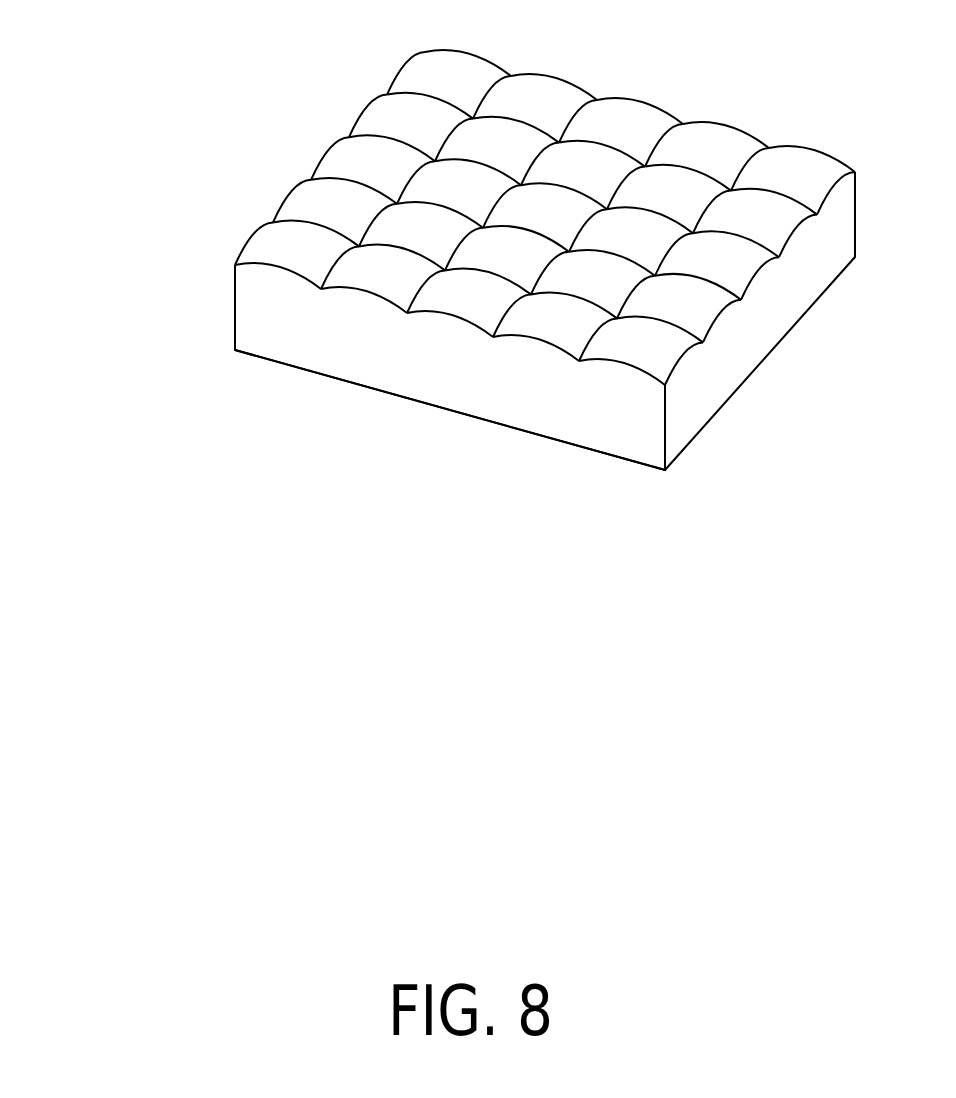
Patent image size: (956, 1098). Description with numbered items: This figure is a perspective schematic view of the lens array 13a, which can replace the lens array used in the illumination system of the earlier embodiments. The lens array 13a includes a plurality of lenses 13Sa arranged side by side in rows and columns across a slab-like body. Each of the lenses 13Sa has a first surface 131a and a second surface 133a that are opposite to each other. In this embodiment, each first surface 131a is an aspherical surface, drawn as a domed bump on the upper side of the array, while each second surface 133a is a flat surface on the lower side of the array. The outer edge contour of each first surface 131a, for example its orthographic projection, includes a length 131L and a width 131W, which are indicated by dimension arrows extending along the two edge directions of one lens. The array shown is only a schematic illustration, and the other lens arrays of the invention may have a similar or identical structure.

The lens array 13a is at (450, 375).
The first surface 131a is at (300, 227).
The lens 13Sa is at (260, 287).
The second surface 133a is at (278, 380).
The length 131L is at (235, 265).
The width 131W is at (235, 265).